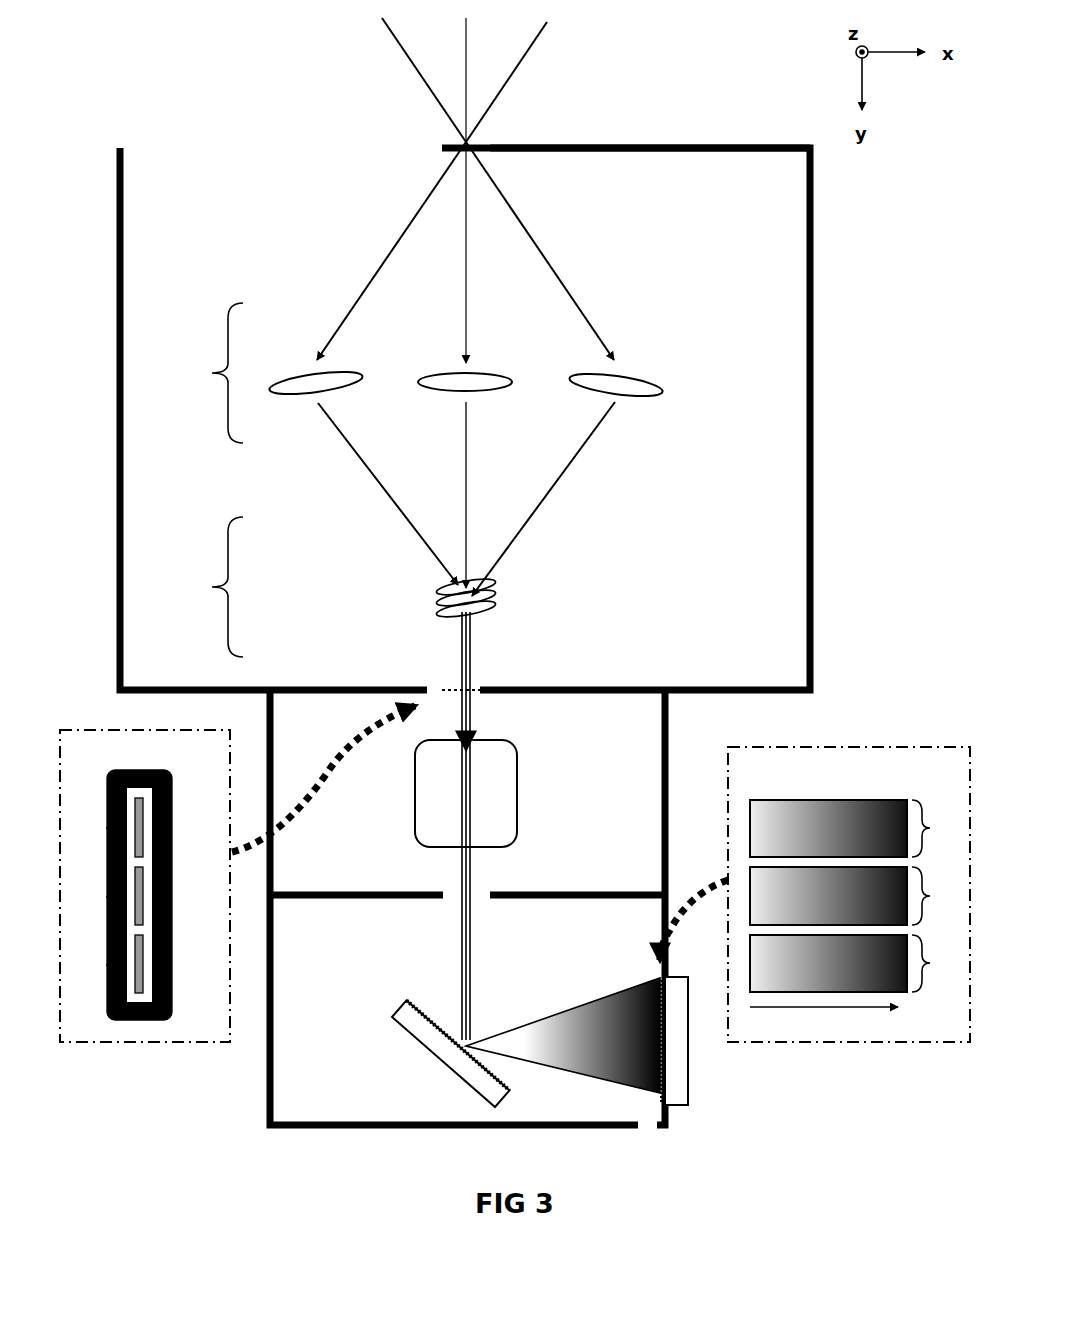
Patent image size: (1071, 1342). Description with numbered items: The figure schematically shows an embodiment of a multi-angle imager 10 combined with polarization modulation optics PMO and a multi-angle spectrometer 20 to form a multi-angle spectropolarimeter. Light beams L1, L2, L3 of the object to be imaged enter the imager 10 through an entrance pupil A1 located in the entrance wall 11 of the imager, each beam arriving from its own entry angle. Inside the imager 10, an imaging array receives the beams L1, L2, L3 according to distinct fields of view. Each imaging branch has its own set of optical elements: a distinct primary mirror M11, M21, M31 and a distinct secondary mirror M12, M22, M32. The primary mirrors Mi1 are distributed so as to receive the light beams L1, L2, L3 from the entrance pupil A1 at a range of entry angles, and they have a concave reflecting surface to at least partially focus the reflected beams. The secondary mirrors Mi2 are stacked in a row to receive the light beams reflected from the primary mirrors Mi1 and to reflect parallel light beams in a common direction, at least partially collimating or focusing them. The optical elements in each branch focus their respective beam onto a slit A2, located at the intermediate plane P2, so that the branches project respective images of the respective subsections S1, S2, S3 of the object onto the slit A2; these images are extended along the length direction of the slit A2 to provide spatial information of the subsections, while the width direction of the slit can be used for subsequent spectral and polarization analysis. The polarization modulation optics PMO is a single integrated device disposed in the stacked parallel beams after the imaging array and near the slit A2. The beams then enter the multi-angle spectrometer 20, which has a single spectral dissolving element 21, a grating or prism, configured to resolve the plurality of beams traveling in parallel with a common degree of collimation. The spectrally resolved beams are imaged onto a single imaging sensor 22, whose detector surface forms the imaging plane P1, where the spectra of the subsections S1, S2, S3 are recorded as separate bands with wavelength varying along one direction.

The multi-angle imager 10 is at (172, 192).
The entrance wall with aperture 11 is at (520, 148).
The multi-angle spectrometer 20 is at (320, 938).
The spectral dissolving element 21 is at (423, 1056).
The imaging sensor 22 is at (703, 1066).
The entrance pupil A1 is at (442, 139).
The slit A2 is at (480, 688).
The first light beam L1 is at (270, 493).
The second light beam L2 is at (287, 593).
The third light beam L3 is at (344, 562).
The primary mirror of first imaging branch M11 is at (311, 374).
The primary mirror of second imaging branch M21 is at (461, 367).
The primary mirror of third imaging branch M31 is at (624, 376).
The secondary mirror of first imaging branch M12 is at (441, 578).
The secondary mirror of second imaging branch M22 is at (441, 597).
The secondary mirror of third imaging branch M32 is at (441, 616).
The primary mirrors Mi1 is at (192, 388).
The secondary mirrors Mi2 is at (194, 601).
The imaging plane P1 is at (659, 1100).
The intermediate image plane P2 is at (441, 690).
The polarization modulation optics PMO is at (523, 799).
The first subsection S1 is at (856, 828).
The second subsection S2 is at (856, 896).
The third subsection S3 is at (856, 963).